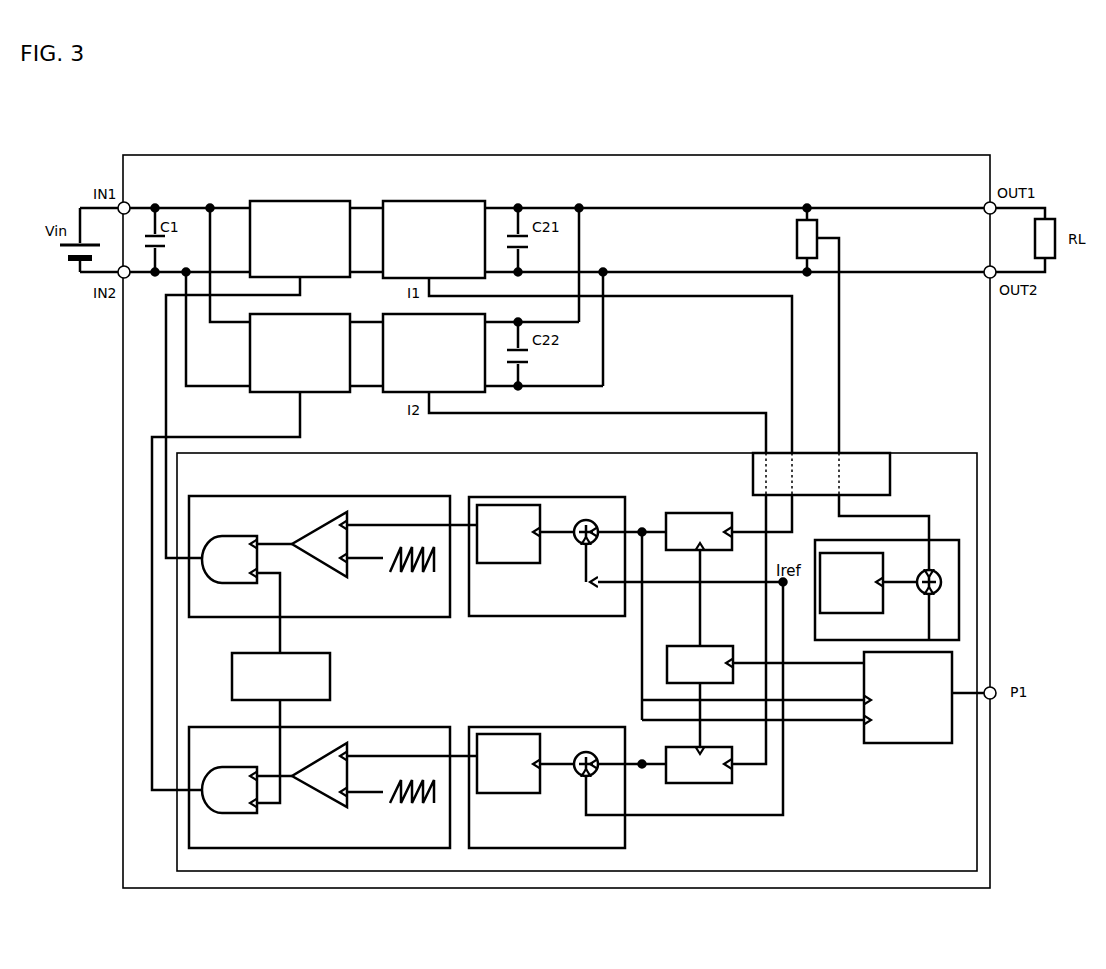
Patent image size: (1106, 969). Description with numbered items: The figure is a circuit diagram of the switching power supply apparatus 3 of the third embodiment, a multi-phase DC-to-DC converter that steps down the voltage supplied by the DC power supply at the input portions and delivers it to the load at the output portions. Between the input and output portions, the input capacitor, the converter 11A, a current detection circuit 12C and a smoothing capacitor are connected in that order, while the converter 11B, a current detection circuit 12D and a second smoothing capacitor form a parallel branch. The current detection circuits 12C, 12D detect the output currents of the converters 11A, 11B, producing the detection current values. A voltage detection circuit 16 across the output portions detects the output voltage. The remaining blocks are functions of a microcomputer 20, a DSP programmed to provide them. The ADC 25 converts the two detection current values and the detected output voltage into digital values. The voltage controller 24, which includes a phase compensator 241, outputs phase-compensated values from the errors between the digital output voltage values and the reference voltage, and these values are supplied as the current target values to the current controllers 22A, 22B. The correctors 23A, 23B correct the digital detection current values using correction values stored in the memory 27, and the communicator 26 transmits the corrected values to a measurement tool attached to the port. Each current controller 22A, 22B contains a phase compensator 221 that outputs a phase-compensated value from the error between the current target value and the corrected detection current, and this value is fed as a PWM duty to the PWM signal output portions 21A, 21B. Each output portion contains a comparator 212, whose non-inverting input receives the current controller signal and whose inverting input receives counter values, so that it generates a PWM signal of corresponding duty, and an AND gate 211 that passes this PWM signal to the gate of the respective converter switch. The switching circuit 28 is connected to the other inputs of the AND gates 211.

The switching power supply apparatus 3 is at (122, 168).
The converter 11A is at (257, 201).
The converter 11B is at (257, 392).
The current detection circuit 12C is at (388, 201).
The current detection circuit 12D is at (387, 392).
The voltage detection circuit 16 is at (797, 239).
The microcomputer 20 is at (977, 469).
The PWM signal output portion 21A is at (232, 496).
The PWM signal output portion 21B is at (228, 727).
The AND gate 211 is at (232, 537).
The comparator 212 is at (309, 541).
The current controller 22A is at (486, 628).
The current controller 22B is at (493, 727).
The phase compensator 221 is at (503, 563).
The corrector 23A is at (682, 513).
The corrector 23B is at (684, 783).
The voltage controller 24 is at (913, 576).
The phase compensator 241 is at (838, 553).
The ADC 25 is at (881, 453).
The communicator 26 is at (882, 744).
The memory 27 is at (724, 646).
The switching circuit 28 is at (332, 665).